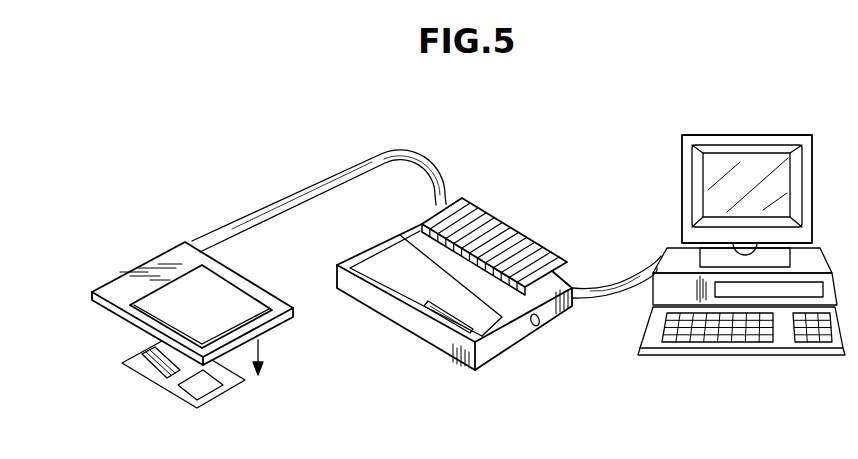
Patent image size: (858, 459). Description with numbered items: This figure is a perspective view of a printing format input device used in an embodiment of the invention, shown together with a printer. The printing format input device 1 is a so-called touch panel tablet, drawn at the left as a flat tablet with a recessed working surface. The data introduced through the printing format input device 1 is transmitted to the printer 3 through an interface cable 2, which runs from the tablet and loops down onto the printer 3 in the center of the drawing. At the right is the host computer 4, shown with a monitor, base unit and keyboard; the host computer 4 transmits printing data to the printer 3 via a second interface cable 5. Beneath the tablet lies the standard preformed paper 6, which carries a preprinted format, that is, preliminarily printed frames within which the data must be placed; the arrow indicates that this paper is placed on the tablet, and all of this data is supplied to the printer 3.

The printing format input device 1 is at (147, 266).
The interface cable 2 is at (333, 172).
The printer 3 is at (516, 340).
The host computer 4 is at (826, 251).
The interface cable 5 is at (615, 293).
The standard preformed paper 6 is at (163, 388).